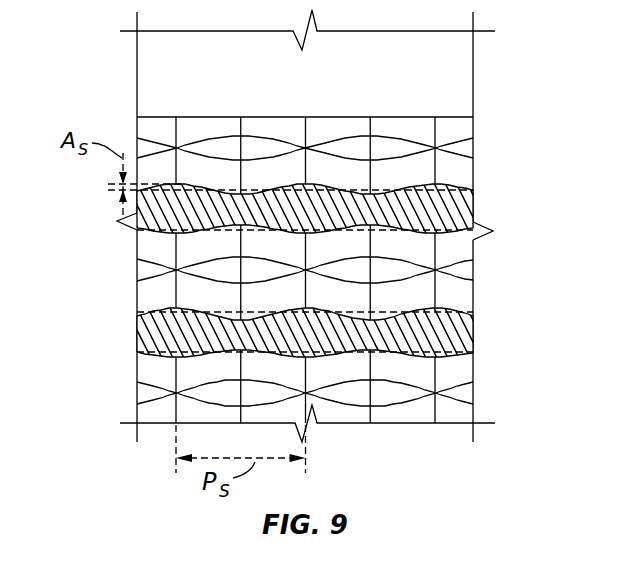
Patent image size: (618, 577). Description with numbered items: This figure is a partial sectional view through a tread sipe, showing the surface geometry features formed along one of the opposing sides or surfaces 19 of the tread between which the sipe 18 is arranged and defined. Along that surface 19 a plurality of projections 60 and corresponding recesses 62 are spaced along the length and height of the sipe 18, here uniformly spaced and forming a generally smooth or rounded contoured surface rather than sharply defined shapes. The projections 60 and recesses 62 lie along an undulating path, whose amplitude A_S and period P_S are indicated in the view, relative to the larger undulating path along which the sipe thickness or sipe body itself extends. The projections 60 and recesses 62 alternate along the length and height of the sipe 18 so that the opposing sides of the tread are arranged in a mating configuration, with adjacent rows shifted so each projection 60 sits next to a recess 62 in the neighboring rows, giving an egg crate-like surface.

The sipe 18 is at (462, 295).
The opposing side or surface of the tread 19 is at (462, 247).
The projection 60 is at (309, 184).
The recess 62 is at (373, 194).